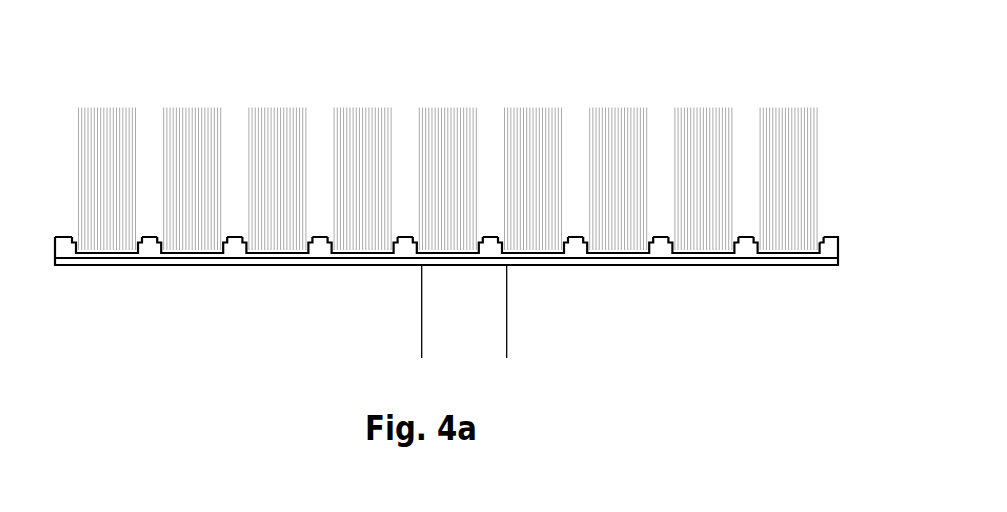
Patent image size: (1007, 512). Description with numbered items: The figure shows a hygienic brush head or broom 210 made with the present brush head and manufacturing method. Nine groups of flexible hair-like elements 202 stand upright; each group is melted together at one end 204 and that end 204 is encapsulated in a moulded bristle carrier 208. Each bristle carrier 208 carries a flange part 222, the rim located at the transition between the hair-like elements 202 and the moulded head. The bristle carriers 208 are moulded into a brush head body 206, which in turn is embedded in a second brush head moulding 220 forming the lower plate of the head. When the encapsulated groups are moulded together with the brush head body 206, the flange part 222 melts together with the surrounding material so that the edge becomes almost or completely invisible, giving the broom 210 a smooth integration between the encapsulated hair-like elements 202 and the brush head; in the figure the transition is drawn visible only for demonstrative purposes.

The broom 210 is at (479, 188).
The group of flexible hair-like elements 202 is at (457, 113).
The end of the group of flexible hair-like elements 204 is at (537, 249).
The brush head body 206 is at (150, 252).
The bristle carrier 208 is at (698, 253).
The second brush head moulding 220 is at (288, 260).
The flange part 222 is at (821, 237).